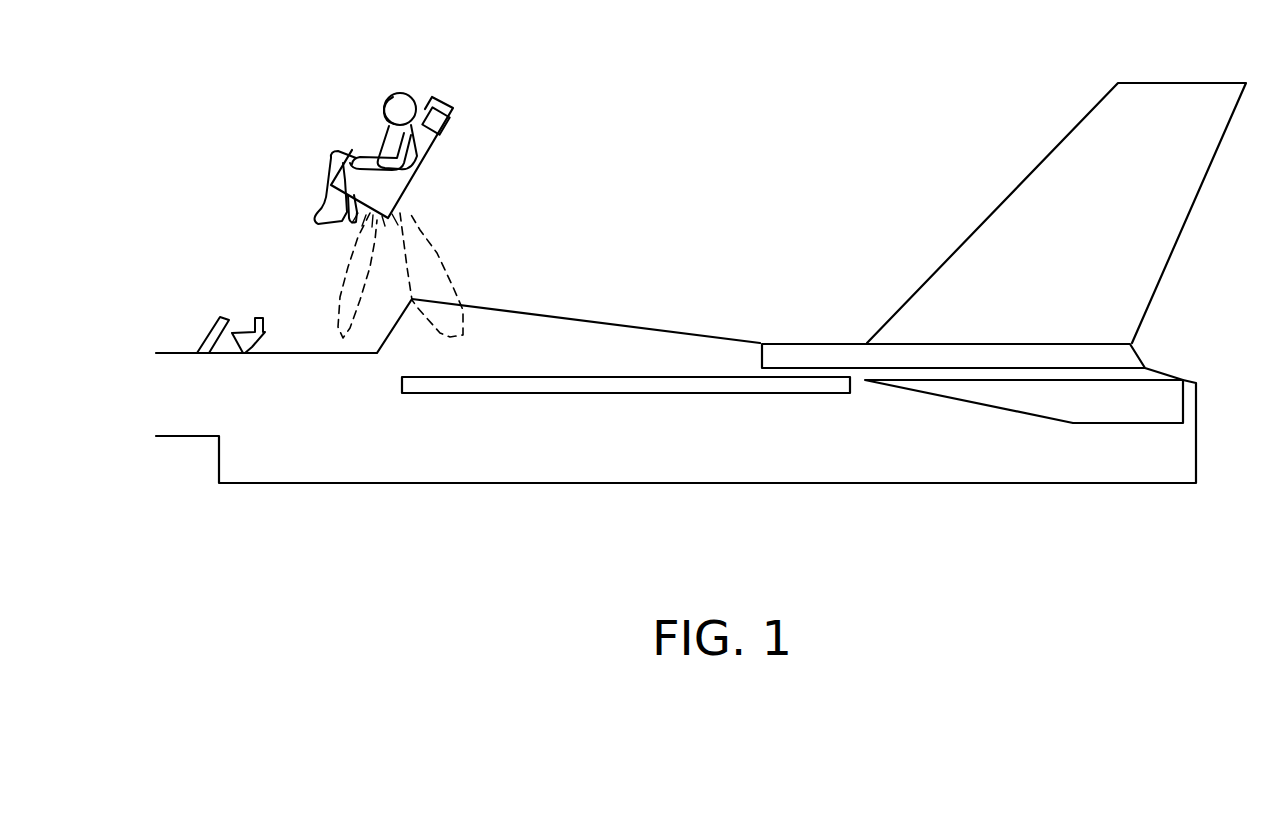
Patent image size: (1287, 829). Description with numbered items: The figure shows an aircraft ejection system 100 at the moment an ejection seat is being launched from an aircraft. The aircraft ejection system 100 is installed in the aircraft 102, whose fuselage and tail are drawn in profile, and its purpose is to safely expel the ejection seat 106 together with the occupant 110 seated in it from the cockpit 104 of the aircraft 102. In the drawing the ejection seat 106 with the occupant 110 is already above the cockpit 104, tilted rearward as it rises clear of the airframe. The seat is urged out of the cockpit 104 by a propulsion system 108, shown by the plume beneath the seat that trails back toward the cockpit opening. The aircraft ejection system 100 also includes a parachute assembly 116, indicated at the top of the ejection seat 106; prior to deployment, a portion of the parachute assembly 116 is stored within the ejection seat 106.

The aircraft ejection system 100 is at (701, 283).
The aircraft 102 is at (701, 283).
The cockpit 104 is at (310, 400).
The ejection seat 106 is at (393, 184).
The propulsion system 108 is at (420, 248).
The occupant 110 is at (392, 97).
The parachute assembly 116 is at (540, 80).